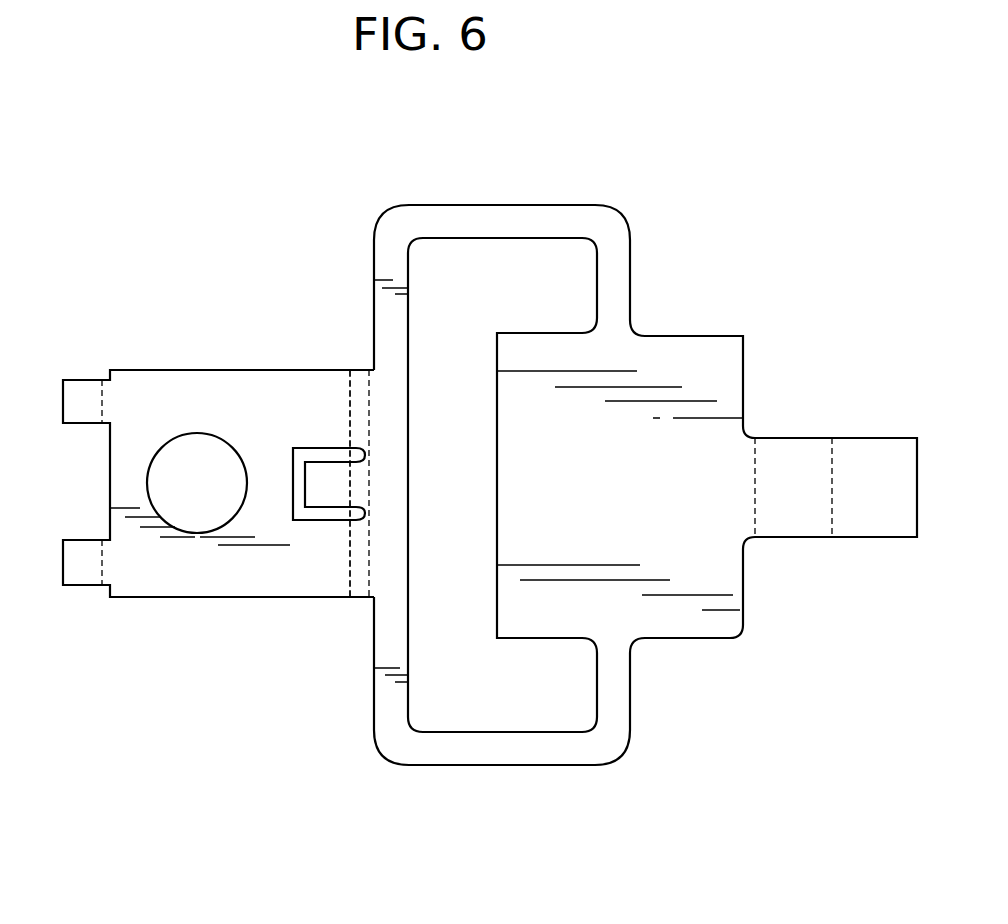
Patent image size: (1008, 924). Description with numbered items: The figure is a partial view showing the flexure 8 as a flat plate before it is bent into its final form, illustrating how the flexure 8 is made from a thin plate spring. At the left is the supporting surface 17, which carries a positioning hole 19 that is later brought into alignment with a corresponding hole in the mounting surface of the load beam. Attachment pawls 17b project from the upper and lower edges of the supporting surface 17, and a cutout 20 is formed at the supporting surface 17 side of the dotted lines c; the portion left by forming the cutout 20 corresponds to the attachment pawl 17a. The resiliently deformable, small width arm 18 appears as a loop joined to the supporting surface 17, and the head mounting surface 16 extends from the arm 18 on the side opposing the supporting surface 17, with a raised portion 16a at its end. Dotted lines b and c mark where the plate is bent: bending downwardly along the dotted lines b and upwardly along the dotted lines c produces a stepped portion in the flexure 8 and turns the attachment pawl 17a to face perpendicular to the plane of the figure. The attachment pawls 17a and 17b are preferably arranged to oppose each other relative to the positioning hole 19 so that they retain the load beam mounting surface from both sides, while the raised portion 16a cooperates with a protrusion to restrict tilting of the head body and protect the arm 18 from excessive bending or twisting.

The flexure 8 is at (490, 446).
The head mounting surface 16 is at (735, 372).
The raised portion 16a is at (876, 507).
The supporting surface 17 is at (213, 395).
The attachment pawl 17a is at (323, 497).
The attachment pawls 17b is at (84, 400).
The arm 18 is at (518, 218).
The positioning hole 19 is at (205, 512).
The cutout 20 is at (330, 457).
The dotted lines c is at (349, 597).
The dotted lines b is at (369, 597).